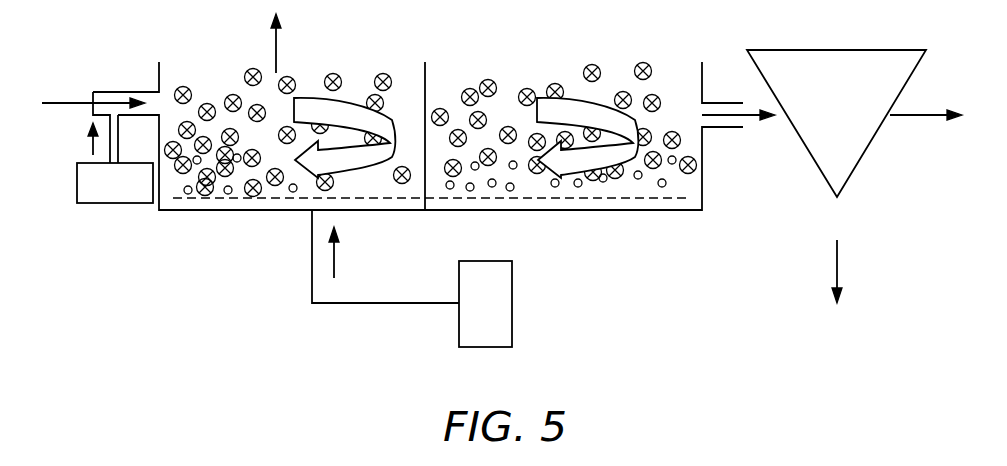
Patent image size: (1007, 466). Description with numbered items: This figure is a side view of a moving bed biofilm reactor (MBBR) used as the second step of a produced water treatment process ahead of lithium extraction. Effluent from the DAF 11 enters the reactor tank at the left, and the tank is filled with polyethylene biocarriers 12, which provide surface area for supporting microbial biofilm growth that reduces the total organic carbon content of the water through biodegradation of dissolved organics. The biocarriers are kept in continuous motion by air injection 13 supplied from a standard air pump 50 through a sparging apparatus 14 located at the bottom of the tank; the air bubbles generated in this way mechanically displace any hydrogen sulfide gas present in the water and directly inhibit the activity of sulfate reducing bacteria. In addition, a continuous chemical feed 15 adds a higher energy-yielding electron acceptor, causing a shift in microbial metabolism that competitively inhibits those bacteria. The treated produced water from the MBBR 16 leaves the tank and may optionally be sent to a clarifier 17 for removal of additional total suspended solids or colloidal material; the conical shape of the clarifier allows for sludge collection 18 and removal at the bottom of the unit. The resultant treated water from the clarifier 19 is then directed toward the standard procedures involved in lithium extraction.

The DAF 11 is at (80, 100).
The polyethylene biocarriers 12 is at (276, 42).
The air injection 13 is at (334, 262).
The sparging apparatus 14 is at (541, 204).
The continuous chemical feed 15 is at (105, 205).
The treated produced water from the MBBR 16 is at (758, 118).
The clarifier 17 is at (857, 120).
The sludge collection 18 is at (837, 270).
The treated water from the clarifier 19 is at (917, 117).
The air pump 50 is at (500, 316).